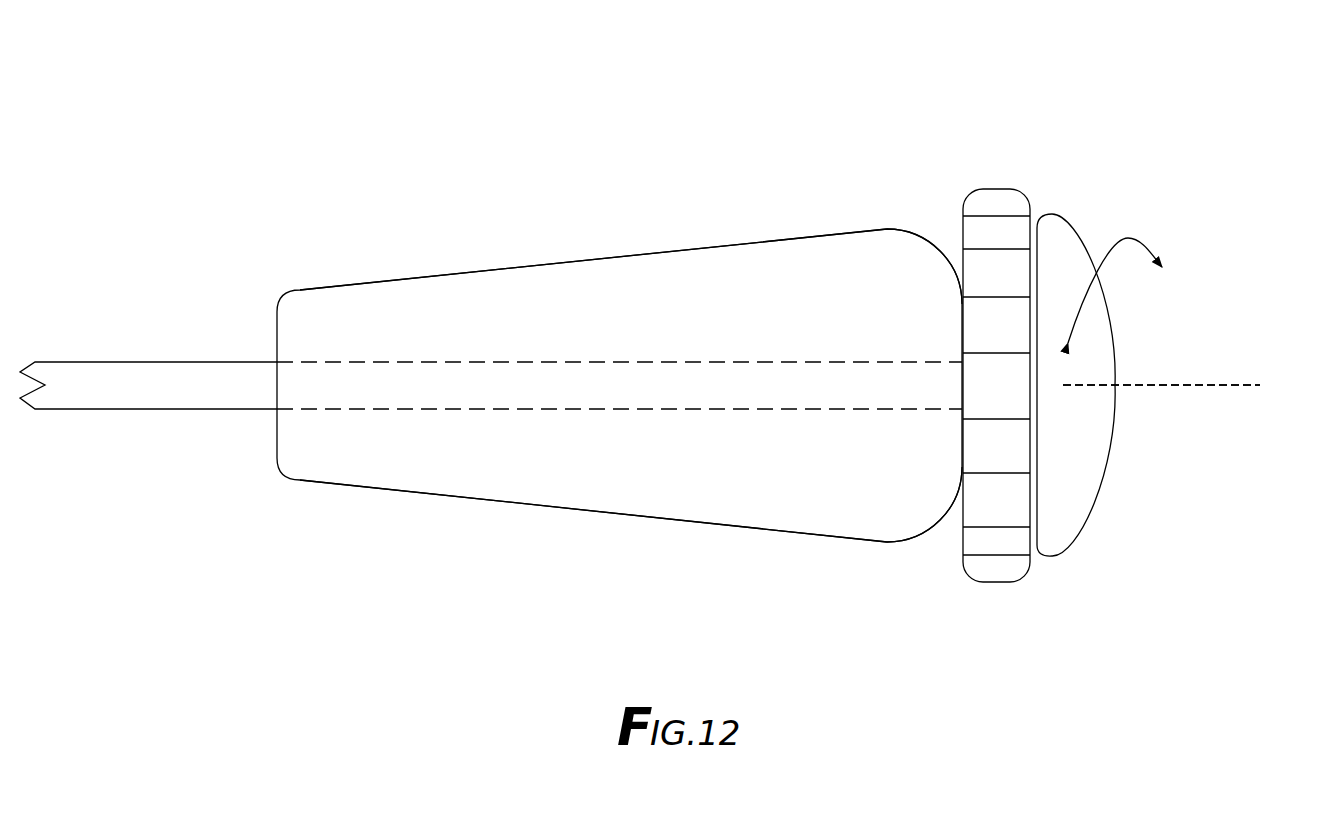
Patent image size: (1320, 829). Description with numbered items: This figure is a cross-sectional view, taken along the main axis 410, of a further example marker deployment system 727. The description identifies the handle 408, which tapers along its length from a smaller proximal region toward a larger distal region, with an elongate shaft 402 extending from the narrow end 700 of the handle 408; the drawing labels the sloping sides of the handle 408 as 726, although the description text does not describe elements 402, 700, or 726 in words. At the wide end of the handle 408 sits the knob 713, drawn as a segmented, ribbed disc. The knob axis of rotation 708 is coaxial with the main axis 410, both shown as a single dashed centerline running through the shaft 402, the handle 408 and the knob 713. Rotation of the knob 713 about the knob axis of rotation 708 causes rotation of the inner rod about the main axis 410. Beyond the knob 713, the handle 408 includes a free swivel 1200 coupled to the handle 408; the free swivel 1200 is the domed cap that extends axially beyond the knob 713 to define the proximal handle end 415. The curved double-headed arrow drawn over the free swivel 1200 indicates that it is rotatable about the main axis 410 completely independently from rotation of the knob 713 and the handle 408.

The elongate shaft 402 is at (103, 360).
The proximal end of housing 700 is at (277, 448).
The handle 408 is at (430, 245).
The tapered sidewall 726 is at (560, 262).
The marker deployment system 727 is at (718, 203).
The knob 713 is at (990, 185).
The free swivel 1200 is at (1085, 500).
The proximal handle end 415 is at (1113, 433).
The main axis 410 is at (1198, 387).
The knob axis of rotation 708 is at (1190, 415).